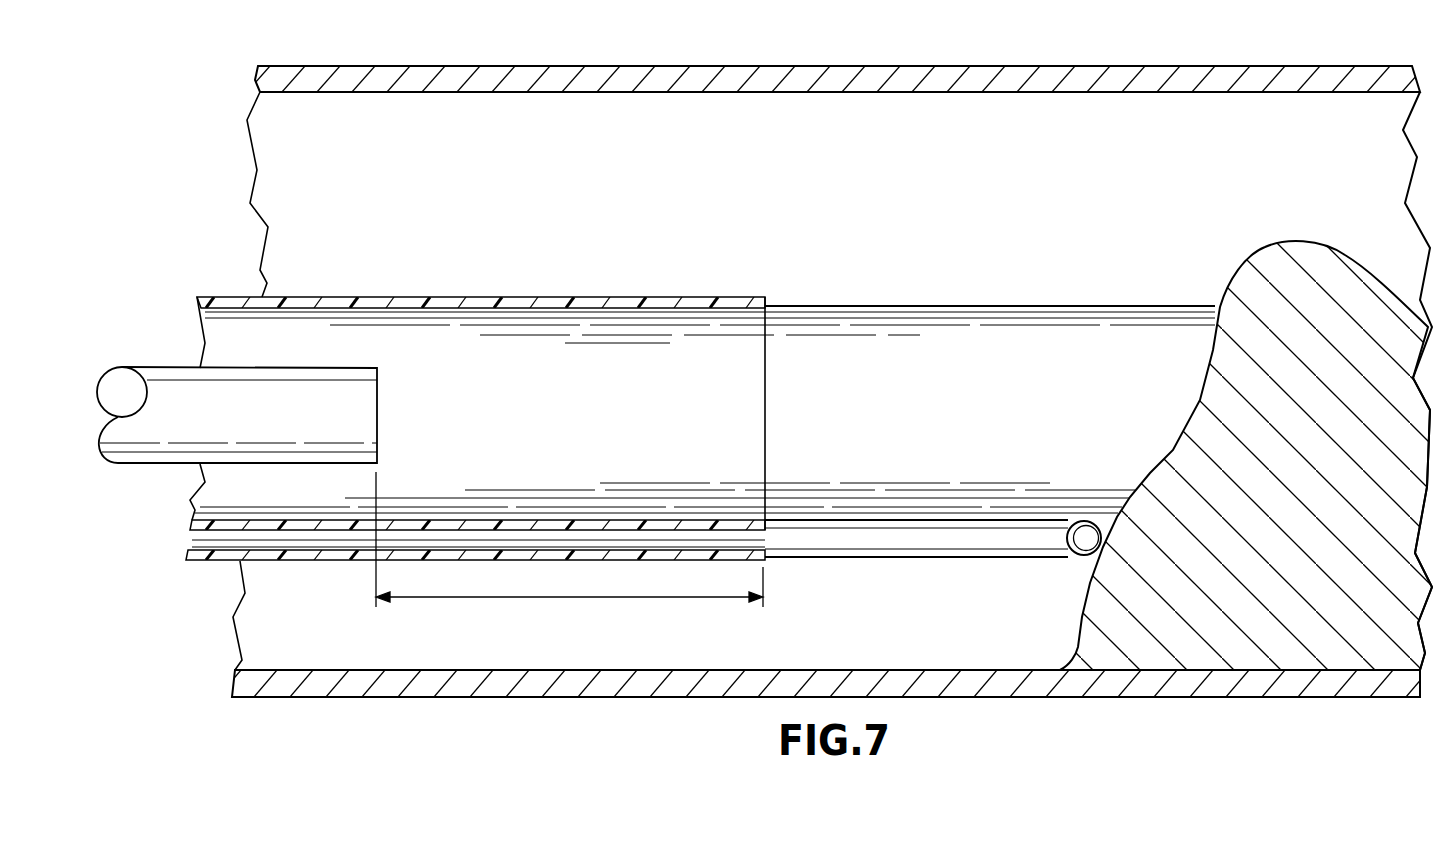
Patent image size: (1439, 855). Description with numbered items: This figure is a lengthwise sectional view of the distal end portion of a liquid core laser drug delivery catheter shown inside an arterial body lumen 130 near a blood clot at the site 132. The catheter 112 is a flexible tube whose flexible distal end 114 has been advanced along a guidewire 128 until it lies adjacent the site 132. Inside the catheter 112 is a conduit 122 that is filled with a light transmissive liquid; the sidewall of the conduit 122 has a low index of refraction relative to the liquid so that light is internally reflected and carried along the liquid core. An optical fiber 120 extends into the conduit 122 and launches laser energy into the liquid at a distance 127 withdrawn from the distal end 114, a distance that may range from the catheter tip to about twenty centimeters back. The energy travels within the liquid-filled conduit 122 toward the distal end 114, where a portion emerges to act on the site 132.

The body lumen 130 is at (488, 66).
The site 132 is at (1317, 260).
The catheter 112 is at (417, 297).
The conduit 122 is at (530, 335).
The distal end 114 is at (767, 300).
The optical fiber 120 is at (165, 367).
The guidewire 128 is at (913, 559).
The distance 127 is at (478, 600).